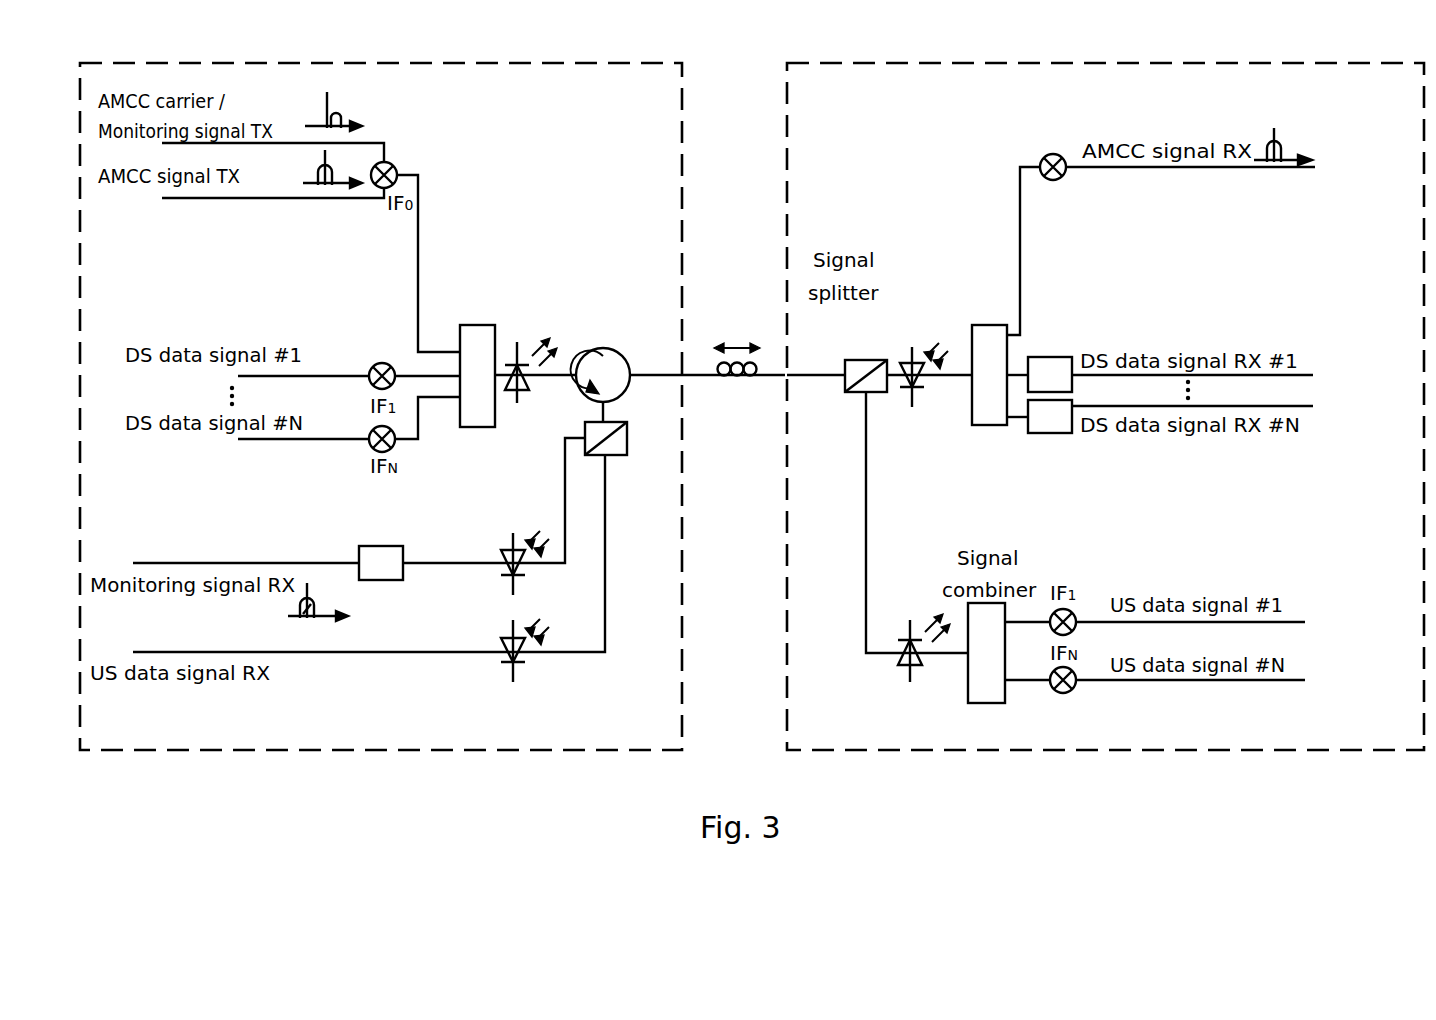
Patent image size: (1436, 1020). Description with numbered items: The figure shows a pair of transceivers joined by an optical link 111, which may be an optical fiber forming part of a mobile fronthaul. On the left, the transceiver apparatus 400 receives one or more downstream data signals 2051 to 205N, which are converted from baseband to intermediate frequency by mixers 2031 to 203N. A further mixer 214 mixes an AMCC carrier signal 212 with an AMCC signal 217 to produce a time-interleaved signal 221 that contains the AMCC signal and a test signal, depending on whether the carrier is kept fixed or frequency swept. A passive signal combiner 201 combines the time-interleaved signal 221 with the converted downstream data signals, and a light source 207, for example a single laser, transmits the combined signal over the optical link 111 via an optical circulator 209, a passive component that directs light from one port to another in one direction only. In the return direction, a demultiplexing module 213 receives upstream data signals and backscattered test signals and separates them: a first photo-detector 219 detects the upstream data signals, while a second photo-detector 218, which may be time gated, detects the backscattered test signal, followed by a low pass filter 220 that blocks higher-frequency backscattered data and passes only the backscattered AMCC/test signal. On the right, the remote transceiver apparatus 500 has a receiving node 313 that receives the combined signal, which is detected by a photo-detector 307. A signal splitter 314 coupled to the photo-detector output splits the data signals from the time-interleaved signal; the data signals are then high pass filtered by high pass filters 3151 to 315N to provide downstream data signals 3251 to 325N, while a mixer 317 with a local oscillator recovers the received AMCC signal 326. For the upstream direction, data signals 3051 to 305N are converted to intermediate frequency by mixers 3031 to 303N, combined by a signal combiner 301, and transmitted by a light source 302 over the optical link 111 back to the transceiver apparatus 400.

The transceiver apparatus 400 is at (532, 63).
The transceiver apparatus 500 is at (1177, 63).
The AMCC carrier signal 212 is at (303, 146).
The AMCC signal 217 is at (303, 200).
The further mixer 214 is at (392, 166).
The time-interleaved signal 221 is at (418, 228).
The downstream data signal 2051 is at (348, 374).
The mixer 2031 is at (392, 366).
The downstream data signal 205N is at (282, 441).
The mixer 203N is at (392, 450).
The signal combiner 201 is at (470, 427).
The light source 207 is at (522, 390).
The optical circulator 209 is at (603, 348).
The demultiplexing module 213 is at (615, 457).
The optical link 111 is at (697, 377).
The low pass filter 220 is at (370, 546).
The second photo-detector 218 is at (507, 545).
The first photo-detector 219 is at (507, 633).
The receiving node 313 is at (868, 360).
The photo-detector 307 is at (900, 388).
The signal splitter 314 is at (1005, 325).
The mixer 317 is at (1055, 183).
The AMCC signal 326 is at (1220, 170).
The high pass filter 3151 is at (1052, 357).
The high pass filter 315N is at (1042, 433).
The downstream data signal 3251 is at (1308, 373).
The downstream data signal 325N is at (1308, 404).
The light source 302 is at (903, 672).
The signal combiner 301 is at (967, 690).
The mixer 3031 is at (1078, 612).
The mixer 303N is at (1052, 688).
The data signal 3051 is at (1292, 620).
The data signal 305N is at (1250, 682).